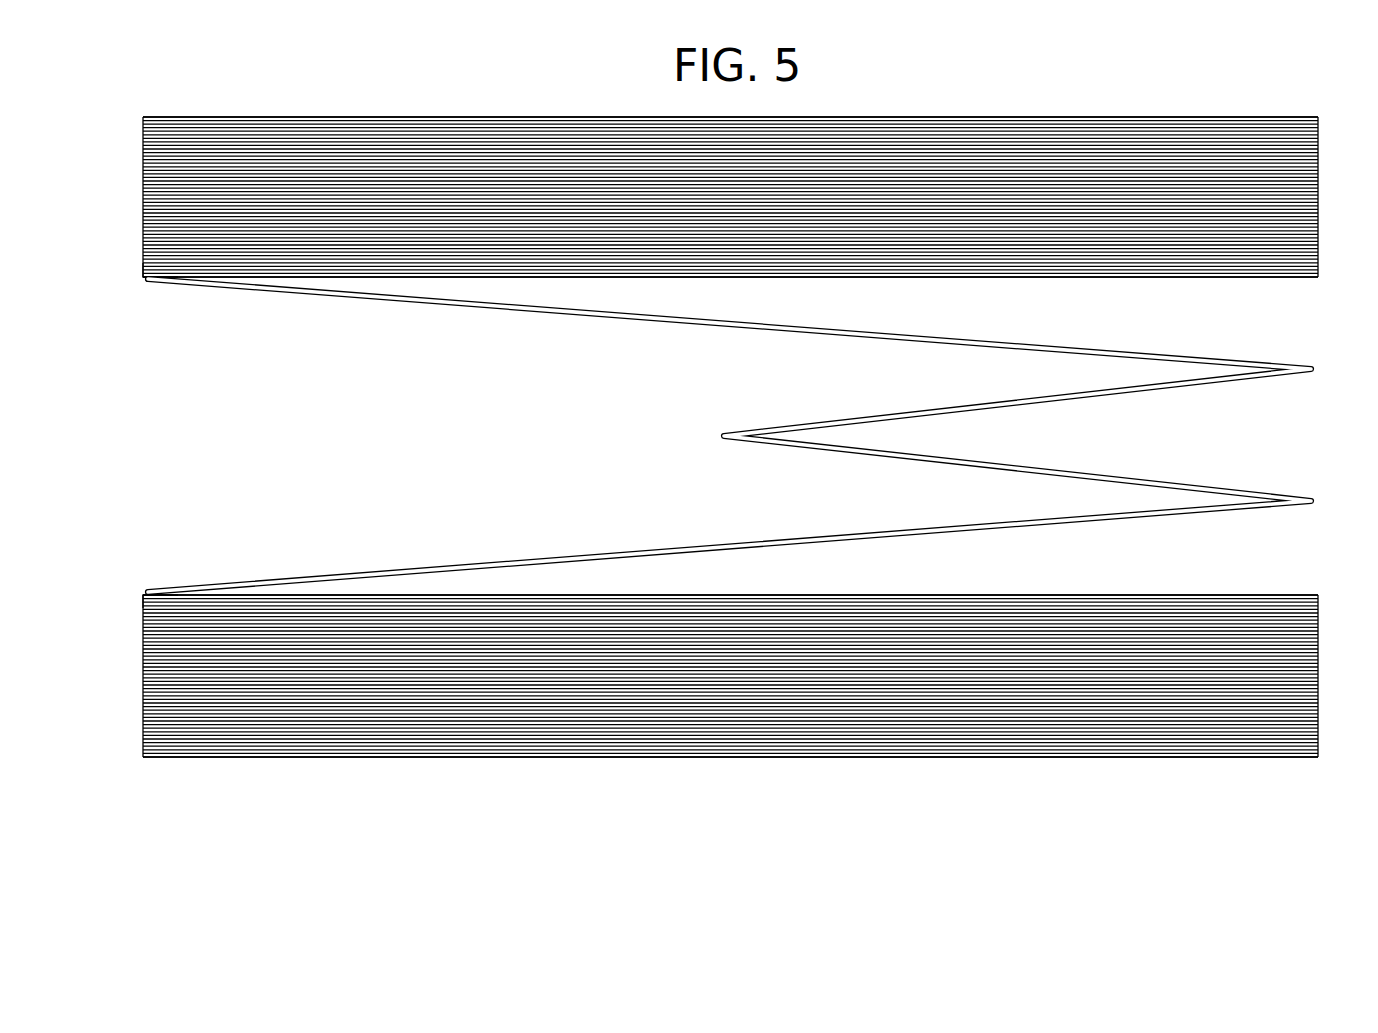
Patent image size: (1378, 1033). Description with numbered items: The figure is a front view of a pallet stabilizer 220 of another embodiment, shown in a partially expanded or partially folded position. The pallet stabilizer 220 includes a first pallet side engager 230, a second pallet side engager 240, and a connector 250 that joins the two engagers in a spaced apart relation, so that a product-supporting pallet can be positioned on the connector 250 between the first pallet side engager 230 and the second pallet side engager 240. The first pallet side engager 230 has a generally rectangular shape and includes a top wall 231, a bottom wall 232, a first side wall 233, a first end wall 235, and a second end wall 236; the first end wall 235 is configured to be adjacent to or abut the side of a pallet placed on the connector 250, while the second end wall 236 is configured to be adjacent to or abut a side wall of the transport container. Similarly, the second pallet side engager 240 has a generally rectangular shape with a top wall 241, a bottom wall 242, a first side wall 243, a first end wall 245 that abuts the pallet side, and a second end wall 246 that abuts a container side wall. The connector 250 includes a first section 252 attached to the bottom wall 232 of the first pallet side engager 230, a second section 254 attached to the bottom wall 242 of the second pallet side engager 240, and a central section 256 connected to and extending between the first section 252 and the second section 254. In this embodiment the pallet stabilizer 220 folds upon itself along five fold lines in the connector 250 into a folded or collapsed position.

The pallet stabilizer 220 is at (485, 785).
The first pallet side engager 230 is at (1320, 614).
The top wall 231 is at (1083, 750).
The bottom wall 232 is at (150, 590).
The first side wall 233 is at (721, 682).
The first end wall 235 is at (135, 700).
The second end wall 236 is at (1311, 688).
The second pallet side engager 240 is at (1320, 129).
The top wall 241 is at (913, 109).
The bottom wall 242 is at (159, 265).
The first side wall 243 is at (699, 197).
The first end wall 245 is at (135, 175).
The second end wall 246 is at (1311, 203).
The connector 250 is at (759, 435).
The first section 252 is at (1100, 586).
The second section 254 is at (1137, 270).
The central section 256 is at (585, 308).